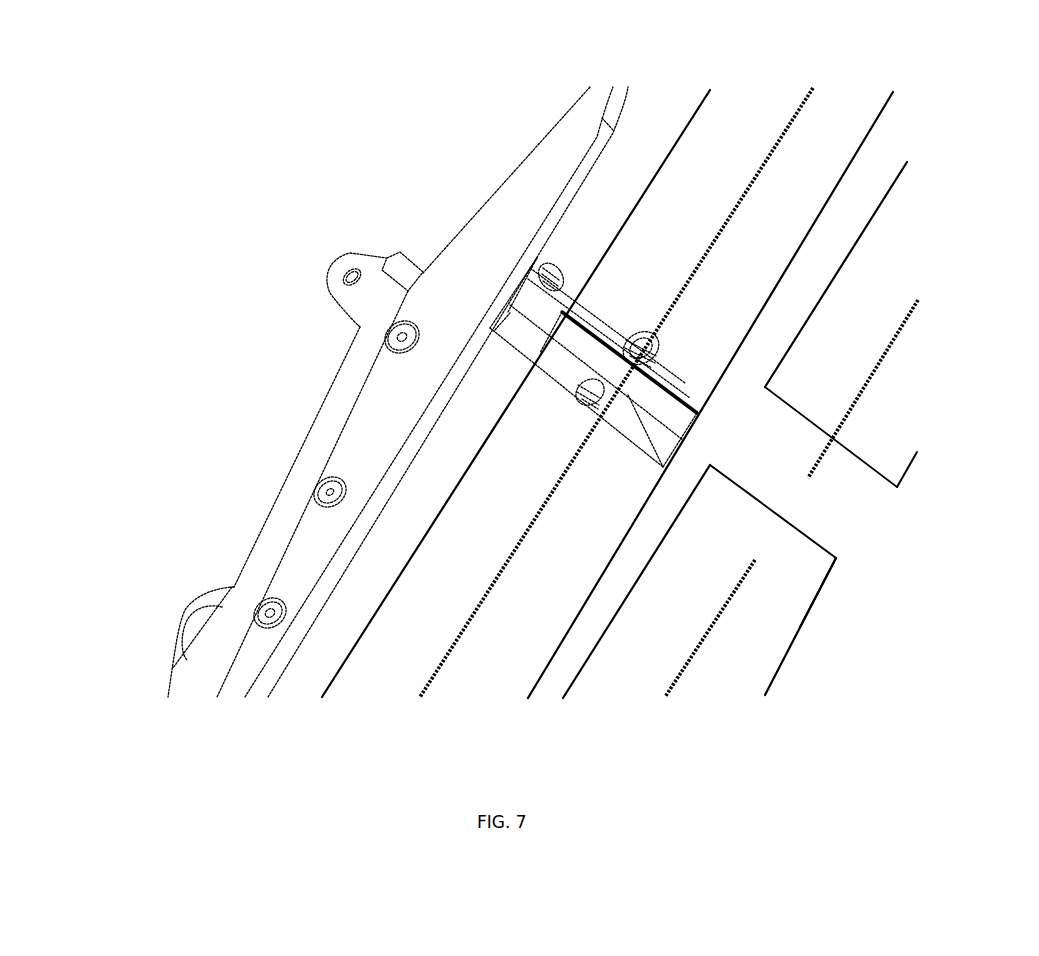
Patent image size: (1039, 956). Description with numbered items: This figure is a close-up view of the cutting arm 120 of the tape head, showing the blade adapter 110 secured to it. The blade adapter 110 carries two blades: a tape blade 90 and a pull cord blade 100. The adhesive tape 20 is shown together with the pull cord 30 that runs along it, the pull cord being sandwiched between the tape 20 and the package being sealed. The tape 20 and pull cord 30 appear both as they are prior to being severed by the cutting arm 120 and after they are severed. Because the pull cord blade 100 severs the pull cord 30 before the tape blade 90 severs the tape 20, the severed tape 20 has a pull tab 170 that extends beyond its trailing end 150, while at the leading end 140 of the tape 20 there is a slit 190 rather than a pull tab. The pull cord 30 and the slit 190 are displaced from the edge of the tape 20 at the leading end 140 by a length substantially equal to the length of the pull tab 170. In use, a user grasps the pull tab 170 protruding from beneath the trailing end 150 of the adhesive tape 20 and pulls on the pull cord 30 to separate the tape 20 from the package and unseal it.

The adhesive tape 20 is at (907, 468).
The pull cord 30 is at (877, 380).
The tape blade 90 is at (682, 402).
The pull cord blade 100 is at (617, 408).
The blade adapter 110 is at (538, 373).
The cutting arm 120 is at (277, 239).
The leading end 140 is at (833, 556).
The trailing end 150 is at (880, 475).
The pull tab 170 is at (812, 475).
The slit 190 is at (758, 562).